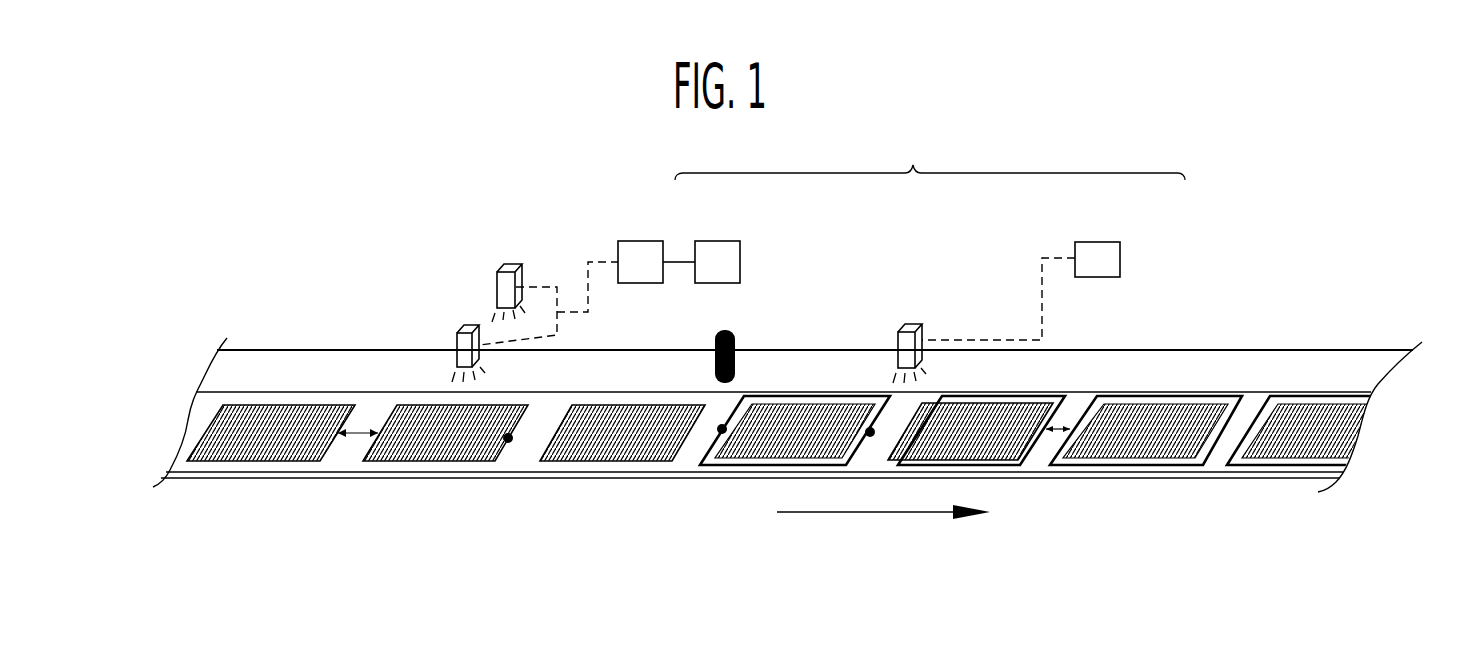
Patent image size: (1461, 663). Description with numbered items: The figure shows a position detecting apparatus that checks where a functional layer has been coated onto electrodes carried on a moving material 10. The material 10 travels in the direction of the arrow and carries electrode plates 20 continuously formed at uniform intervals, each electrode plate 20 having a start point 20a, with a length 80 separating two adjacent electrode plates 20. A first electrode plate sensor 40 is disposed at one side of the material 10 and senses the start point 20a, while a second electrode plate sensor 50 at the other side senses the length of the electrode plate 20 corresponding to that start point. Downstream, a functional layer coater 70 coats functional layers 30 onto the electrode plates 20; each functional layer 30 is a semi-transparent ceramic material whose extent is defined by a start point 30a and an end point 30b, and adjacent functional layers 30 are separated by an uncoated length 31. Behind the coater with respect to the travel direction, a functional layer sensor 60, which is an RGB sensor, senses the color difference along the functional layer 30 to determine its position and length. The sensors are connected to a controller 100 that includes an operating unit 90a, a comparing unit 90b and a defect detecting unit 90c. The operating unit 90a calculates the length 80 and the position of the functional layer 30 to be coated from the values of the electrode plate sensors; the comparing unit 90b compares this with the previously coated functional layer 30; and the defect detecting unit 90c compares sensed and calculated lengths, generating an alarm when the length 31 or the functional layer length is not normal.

The material 10 is at (520, 466).
The electrode plate 20 is at (645, 452).
The start point of the electrode plate 20a is at (506, 443).
The functional layer 30 is at (748, 467).
The start point 30a is at (868, 438).
The end point 30b is at (720, 434).
The length between two adjacent functional layers 31 is at (1058, 433).
The first electrode plate sensor 40 is at (463, 327).
The second electrode plate sensor 50 is at (506, 270).
The functional layer sensor 60 is at (919, 323).
The functional layer coater 70 is at (736, 334).
The length between two adjacent electrode plates 80 is at (353, 437).
The operating unit 90a is at (660, 241).
The comparing unit 90b is at (742, 241).
The defect detecting unit 90c is at (1108, 242).
The controller 100 is at (930, 154).